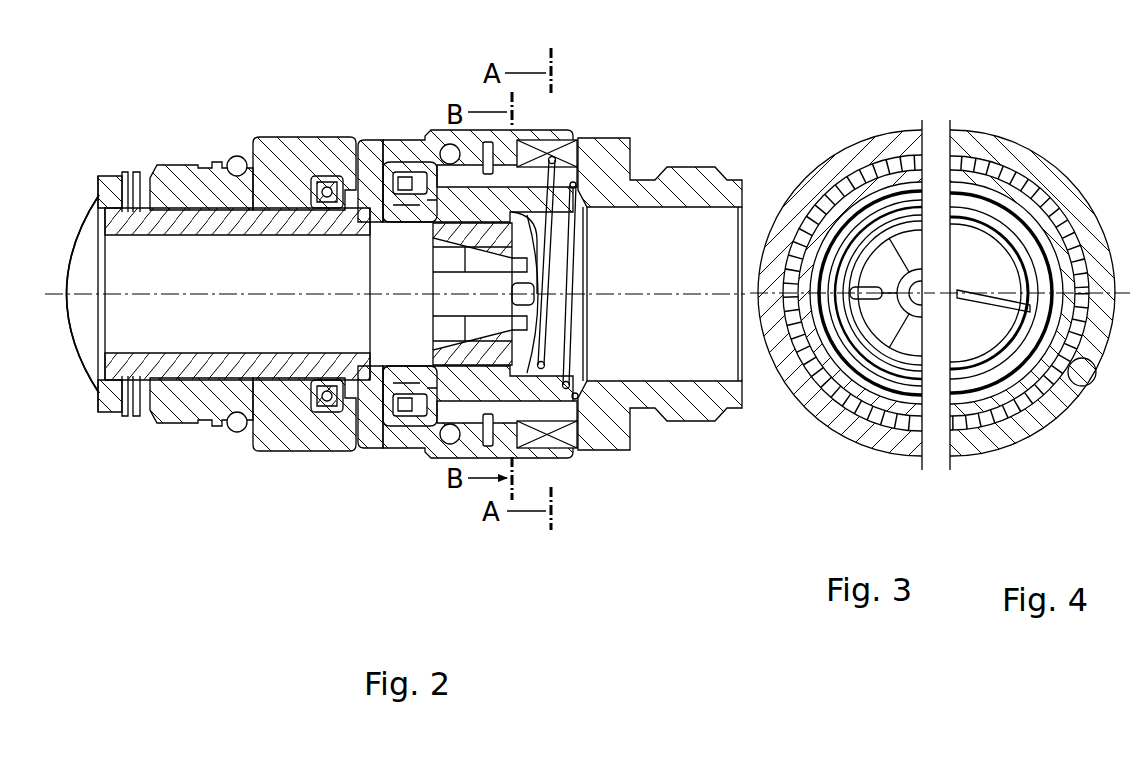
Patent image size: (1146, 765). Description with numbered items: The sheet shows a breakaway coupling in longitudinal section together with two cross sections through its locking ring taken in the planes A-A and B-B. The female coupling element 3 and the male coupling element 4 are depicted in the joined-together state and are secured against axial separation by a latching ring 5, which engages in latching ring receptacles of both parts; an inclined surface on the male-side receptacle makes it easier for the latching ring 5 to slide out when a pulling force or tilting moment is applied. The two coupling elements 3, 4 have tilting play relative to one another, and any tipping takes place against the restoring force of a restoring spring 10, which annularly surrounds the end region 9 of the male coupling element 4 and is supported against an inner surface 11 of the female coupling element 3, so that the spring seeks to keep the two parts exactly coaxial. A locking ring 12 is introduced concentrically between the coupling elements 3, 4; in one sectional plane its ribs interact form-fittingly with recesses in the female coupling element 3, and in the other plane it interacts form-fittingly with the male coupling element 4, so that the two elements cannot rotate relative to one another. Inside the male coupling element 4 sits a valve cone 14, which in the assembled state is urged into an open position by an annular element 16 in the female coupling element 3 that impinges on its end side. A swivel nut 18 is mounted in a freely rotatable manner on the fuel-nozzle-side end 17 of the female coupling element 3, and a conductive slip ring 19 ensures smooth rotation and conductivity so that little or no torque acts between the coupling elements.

In FIG. 2, the female coupling element 3 is at (423, 155).
In FIG. 3, the female coupling element 3 is at (823, 418).
In FIG. 4, the female coupling element 3 is at (1048, 418).
In FIG. 2, the male coupling element 4 is at (548, 425).
In FIG. 3, the male coupling element 4 is at (860, 192).
In FIG. 4, the male coupling element 4 is at (980, 178).
In FIG. 2, the latching ring 5 is at (497, 165).
In FIG. 2, the end region 9 is at (395, 395).
In FIG. 2, the restoring spring 10 is at (413, 385).
In FIG. 2, the inner surface 11 is at (425, 400).
In FIG. 2, the locking ring 12 is at (560, 160).
In FIG. 3, the locking ring 12 is at (807, 232).
In FIG. 4, the locking ring 12 is at (980, 423).
In FIG. 2, the valve cone 14 is at (440, 213).
In FIG. 2, the annular element 16 is at (375, 256).
In FIG. 2, the fuel-nozzle-side end 17 is at (212, 378).
In FIG. 2, the swivel nut 18 is at (307, 420).
In FIG. 2, the conductive slip ring 19 is at (355, 450).